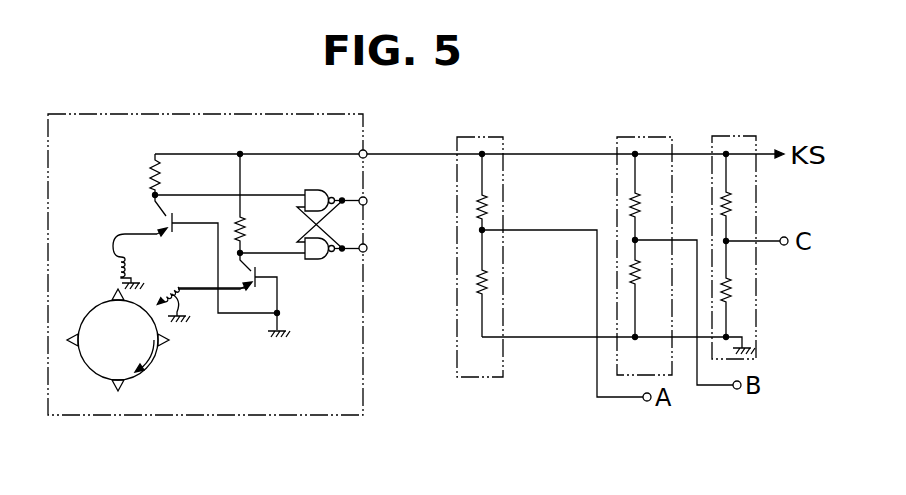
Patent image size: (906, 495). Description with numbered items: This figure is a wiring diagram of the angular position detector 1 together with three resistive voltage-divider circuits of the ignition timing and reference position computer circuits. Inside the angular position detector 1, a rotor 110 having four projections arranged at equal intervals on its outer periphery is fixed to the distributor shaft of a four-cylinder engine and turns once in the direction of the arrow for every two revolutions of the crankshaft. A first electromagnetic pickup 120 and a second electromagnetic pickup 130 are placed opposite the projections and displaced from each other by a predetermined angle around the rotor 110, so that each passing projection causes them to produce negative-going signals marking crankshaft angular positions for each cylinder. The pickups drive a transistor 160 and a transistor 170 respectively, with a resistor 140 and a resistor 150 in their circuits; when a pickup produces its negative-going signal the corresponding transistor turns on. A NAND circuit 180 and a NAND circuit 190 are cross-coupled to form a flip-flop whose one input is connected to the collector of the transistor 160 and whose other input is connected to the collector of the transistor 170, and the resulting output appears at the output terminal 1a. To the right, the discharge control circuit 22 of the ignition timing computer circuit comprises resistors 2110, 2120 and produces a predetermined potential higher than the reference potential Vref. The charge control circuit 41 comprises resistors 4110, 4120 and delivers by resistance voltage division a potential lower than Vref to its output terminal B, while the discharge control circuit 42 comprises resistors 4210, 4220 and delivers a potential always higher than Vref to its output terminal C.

The angular position detector 1 is at (298, 416).
The output terminal 1a is at (368, 201).
The rotor 110 is at (150, 366).
The first electromagnetic pickup 120 is at (117, 269).
The second electromagnetic pickup 130 is at (161, 290).
The resistor 140 is at (151, 173).
The resistor 150 is at (245, 229).
The transistor 160 is at (164, 219).
The transistor 170 is at (249, 292).
The NAND circuit 180 is at (318, 189).
The NAND circuit 190 is at (318, 259).
The discharge control circuit 22 is at (457, 308).
The resistor 2110 is at (489, 207).
The resistor 2120 is at (489, 277).
The charge control circuit 41 is at (617, 360).
The resistor 4110 is at (630, 204).
The resistor 4120 is at (630, 276).
The discharge control circuit 42 is at (757, 325).
The resistor 4210 is at (733, 205).
The resistor 4220 is at (733, 284).